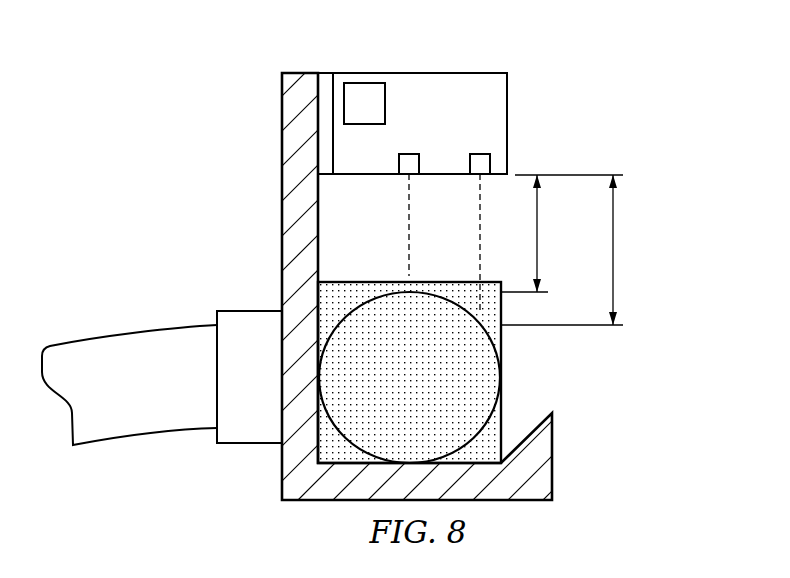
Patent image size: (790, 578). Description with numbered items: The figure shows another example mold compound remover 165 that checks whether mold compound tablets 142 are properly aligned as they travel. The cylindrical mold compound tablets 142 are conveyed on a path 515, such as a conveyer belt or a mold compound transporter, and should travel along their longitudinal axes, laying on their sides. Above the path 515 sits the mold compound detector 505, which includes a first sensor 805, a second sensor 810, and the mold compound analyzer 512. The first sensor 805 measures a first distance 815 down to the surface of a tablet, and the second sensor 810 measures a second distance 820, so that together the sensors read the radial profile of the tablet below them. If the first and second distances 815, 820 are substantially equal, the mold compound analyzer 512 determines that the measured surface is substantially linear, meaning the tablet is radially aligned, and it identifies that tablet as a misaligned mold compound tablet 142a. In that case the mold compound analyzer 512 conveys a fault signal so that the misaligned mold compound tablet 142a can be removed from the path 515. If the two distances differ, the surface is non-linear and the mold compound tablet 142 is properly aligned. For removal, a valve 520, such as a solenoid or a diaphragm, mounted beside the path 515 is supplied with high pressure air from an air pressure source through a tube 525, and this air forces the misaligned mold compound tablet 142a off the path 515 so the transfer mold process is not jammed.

The mold compound remover 165 is at (166, 85).
The mold compound detector 505 is at (450, 80).
The mold compound analyzer 512 is at (364, 90).
The first sensor 805 is at (410, 154).
The second sensor 810 is at (477, 154).
The mold compound tablets 142 is at (492, 378).
The misaligned mold compound tablet 142a is at (377, 292).
The path 515 is at (552, 463).
The valve 520 is at (247, 433).
The tube 525 is at (147, 423).
The first distance 815 is at (538, 232).
The second distance 820 is at (613, 250).